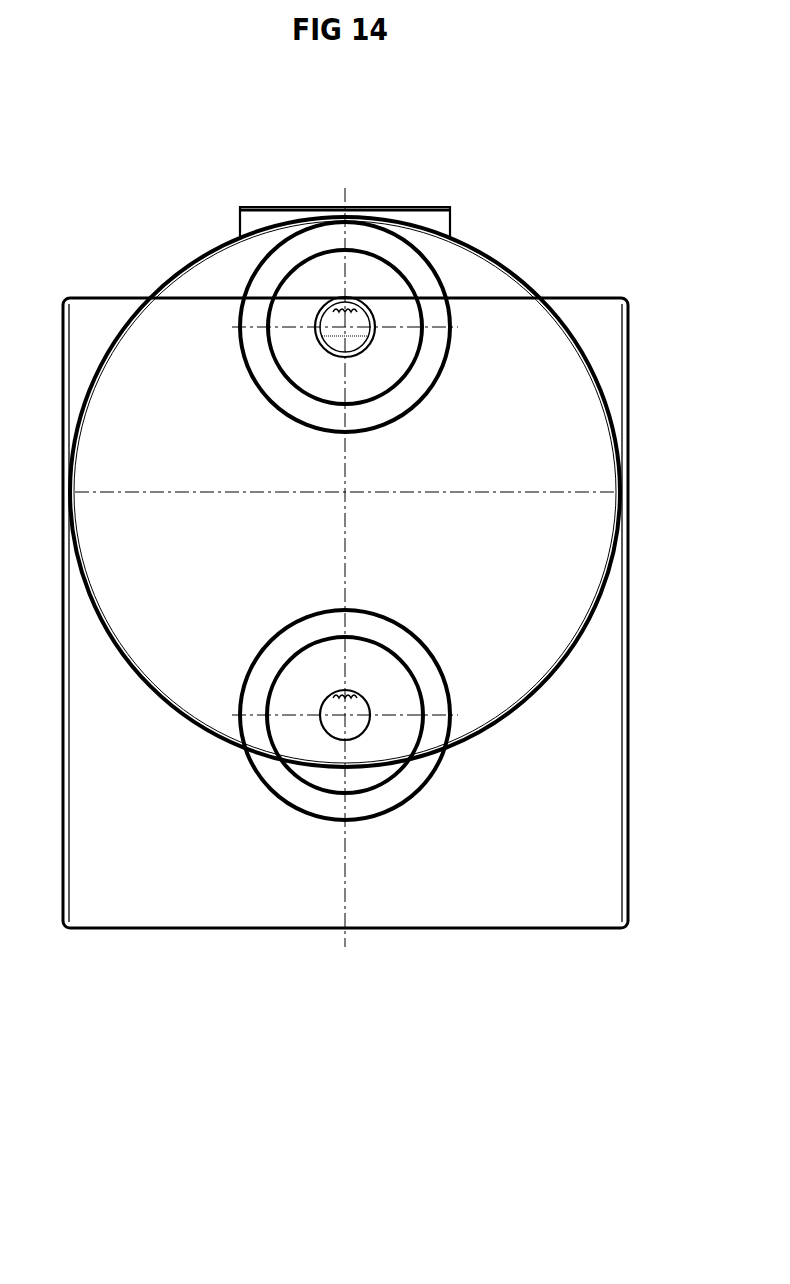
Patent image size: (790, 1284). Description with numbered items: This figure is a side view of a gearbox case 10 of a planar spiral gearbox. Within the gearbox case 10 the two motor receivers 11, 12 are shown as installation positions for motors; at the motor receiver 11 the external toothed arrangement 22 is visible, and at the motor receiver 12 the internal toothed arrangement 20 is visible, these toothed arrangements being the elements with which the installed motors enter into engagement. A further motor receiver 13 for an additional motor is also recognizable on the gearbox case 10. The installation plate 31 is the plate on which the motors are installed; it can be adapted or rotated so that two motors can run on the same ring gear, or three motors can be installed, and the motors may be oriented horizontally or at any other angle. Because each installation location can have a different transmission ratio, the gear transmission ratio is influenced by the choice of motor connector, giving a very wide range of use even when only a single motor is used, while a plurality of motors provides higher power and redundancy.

The gearbox case 10 is at (287, 928).
The motor receiver 11 is at (387, 763).
The motor receiver 12 is at (393, 307).
The motor receiver 13 is at (288, 206).
The internal toothed arrangement 20 is at (358, 302).
The external toothed arrangement 22 is at (362, 690).
The installation plate 31 is at (467, 434).